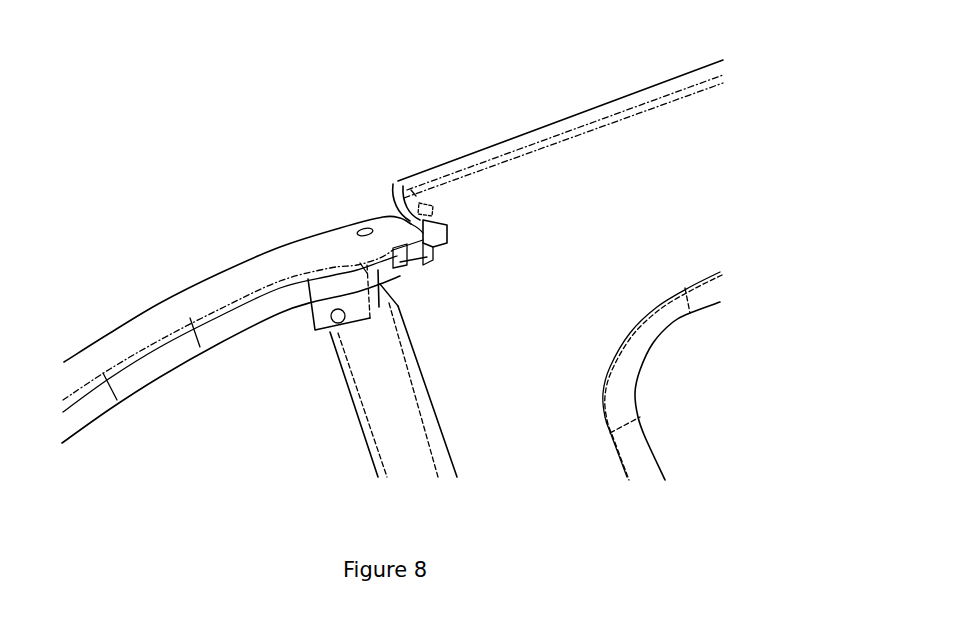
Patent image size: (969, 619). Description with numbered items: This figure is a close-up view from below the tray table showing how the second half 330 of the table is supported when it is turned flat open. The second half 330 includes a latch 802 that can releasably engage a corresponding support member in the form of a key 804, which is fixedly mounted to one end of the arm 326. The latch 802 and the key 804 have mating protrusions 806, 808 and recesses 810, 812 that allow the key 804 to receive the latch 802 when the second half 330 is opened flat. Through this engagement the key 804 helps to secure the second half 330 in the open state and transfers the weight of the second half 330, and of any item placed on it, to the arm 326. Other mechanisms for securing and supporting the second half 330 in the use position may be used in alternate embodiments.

The arm 326 is at (137, 330).
The second half 330 is at (603, 155).
The latch 802 is at (398, 213).
The key 804 is at (455, 239).
The protrusion 806 is at (392, 188).
The protrusion 808 is at (438, 216).
The recess 810 is at (423, 210).
The recess 812 is at (433, 250).